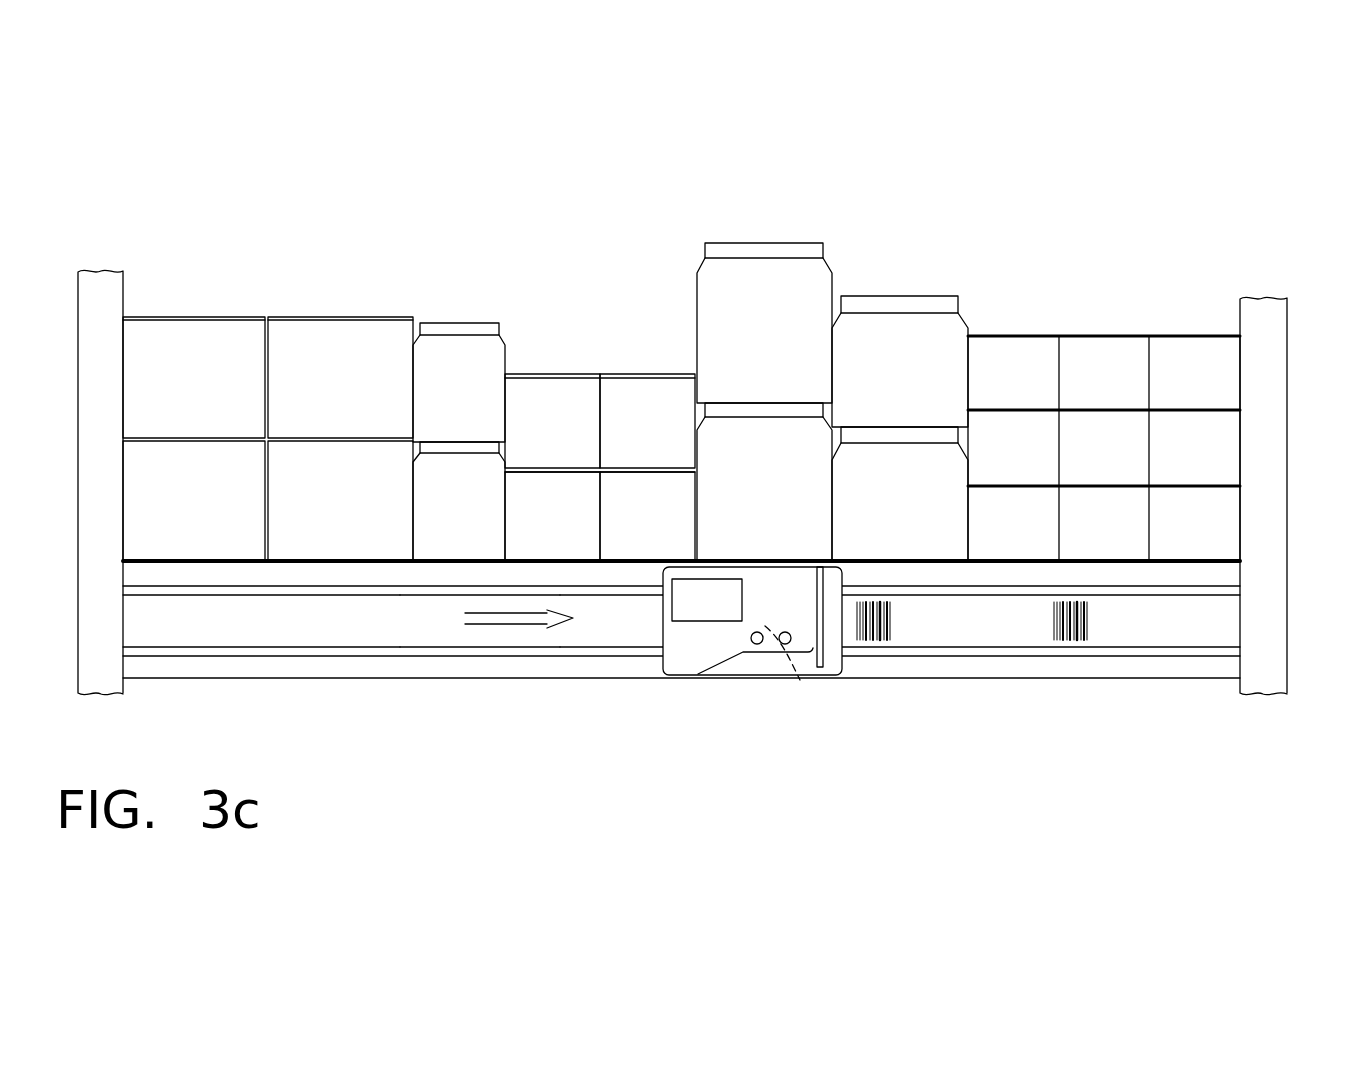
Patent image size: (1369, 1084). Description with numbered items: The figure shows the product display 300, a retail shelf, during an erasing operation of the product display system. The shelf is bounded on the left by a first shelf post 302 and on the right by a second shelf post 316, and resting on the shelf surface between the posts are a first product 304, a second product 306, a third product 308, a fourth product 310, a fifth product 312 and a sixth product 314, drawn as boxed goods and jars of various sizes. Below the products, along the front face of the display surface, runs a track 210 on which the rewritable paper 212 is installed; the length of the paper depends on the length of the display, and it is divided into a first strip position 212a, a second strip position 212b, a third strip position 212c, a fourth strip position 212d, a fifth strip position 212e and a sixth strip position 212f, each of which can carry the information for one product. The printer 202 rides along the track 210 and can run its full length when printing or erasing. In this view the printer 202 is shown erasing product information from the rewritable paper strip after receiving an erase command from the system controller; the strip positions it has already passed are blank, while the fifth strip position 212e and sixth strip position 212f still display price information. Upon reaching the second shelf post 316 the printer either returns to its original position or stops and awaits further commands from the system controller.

The product display 300 is at (1147, 283).
The first shelf post 302 is at (120, 273).
The first product 304 is at (213, 316).
The second product 306 is at (453, 323).
The third product 308 is at (548, 374).
The fourth product 310 is at (795, 243).
The fifth product 312 is at (943, 296).
The sixth product 314 is at (1048, 334).
The second shelf post 316 is at (1277, 292).
The track 210 is at (1142, 592).
The rewritable paper 212 is at (1230, 625).
The first strip position 212a is at (285, 632).
The second strip position 212b is at (469, 638).
The third strip position 212c is at (620, 638).
The fourth strip position 212d is at (800, 680).
The fifth strip position 212e is at (920, 628).
The sixth strip position 212f is at (1102, 632).
The printer 202 is at (723, 650).